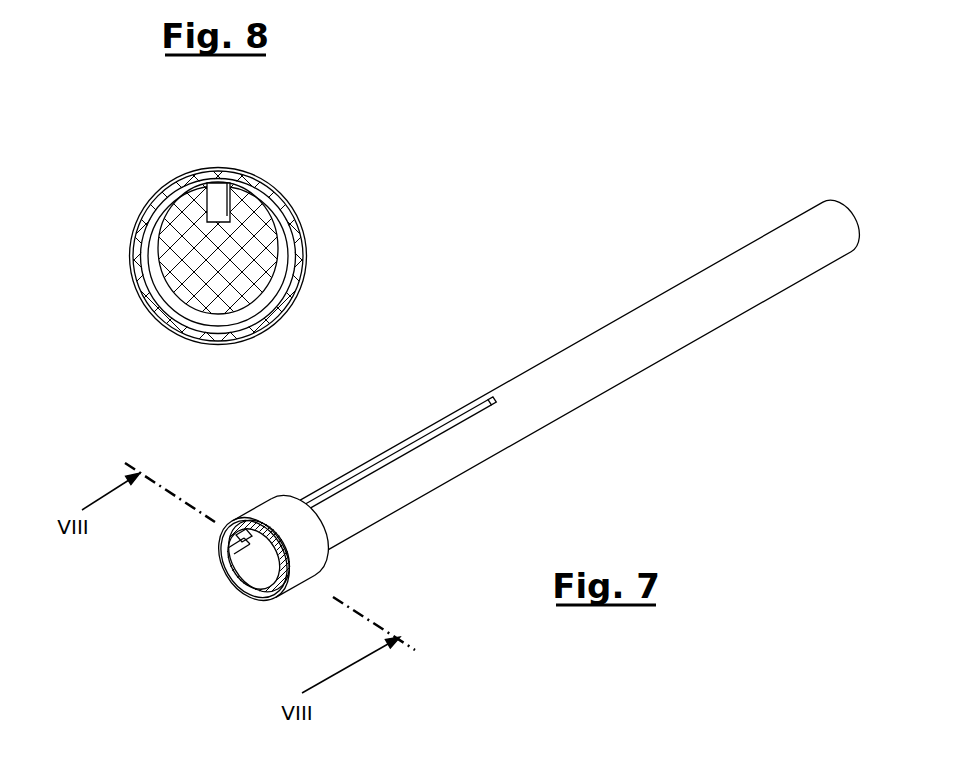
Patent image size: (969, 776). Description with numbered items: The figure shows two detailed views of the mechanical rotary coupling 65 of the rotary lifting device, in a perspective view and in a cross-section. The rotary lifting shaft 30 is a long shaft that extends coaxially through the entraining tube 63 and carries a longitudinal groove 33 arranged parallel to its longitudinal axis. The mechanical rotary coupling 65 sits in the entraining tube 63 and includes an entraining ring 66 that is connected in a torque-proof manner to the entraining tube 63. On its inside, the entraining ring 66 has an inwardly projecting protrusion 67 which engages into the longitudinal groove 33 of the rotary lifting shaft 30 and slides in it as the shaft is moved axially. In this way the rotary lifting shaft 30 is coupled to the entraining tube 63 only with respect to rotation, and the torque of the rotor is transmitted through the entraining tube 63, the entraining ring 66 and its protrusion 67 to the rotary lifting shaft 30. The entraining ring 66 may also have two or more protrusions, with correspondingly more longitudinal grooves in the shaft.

In FIG. 8, the rotary lifting shaft 30 is at (187, 273).
In FIG. 7, the rotary lifting shaft 30 is at (648, 355).
In FIG. 8, the longitudinal groove 33 is at (229, 214).
In FIG. 7, the longitudinal groove 33 is at (397, 458).
In FIG. 8, the entraining tube 63 is at (165, 183).
In FIG. 8, the mechanical rotary coupling 65 is at (320, 274).
In FIG. 8, the entraining ring 66 is at (247, 335).
In FIG. 7, the entraining ring 66 is at (270, 512).
In FIG. 8, the protrusion 67 is at (220, 208).
In FIG. 7, the protrusion 67 is at (253, 531).